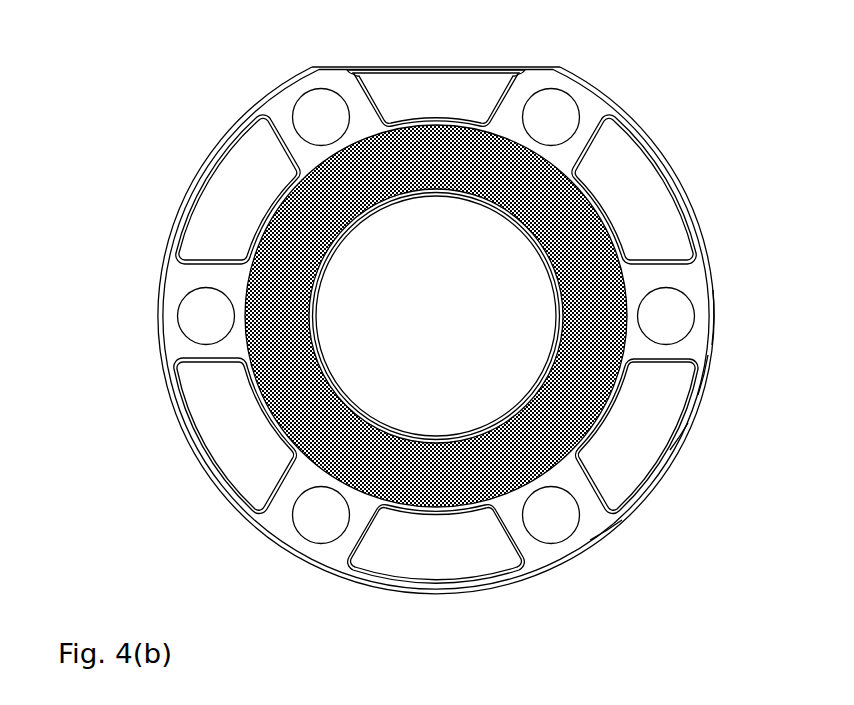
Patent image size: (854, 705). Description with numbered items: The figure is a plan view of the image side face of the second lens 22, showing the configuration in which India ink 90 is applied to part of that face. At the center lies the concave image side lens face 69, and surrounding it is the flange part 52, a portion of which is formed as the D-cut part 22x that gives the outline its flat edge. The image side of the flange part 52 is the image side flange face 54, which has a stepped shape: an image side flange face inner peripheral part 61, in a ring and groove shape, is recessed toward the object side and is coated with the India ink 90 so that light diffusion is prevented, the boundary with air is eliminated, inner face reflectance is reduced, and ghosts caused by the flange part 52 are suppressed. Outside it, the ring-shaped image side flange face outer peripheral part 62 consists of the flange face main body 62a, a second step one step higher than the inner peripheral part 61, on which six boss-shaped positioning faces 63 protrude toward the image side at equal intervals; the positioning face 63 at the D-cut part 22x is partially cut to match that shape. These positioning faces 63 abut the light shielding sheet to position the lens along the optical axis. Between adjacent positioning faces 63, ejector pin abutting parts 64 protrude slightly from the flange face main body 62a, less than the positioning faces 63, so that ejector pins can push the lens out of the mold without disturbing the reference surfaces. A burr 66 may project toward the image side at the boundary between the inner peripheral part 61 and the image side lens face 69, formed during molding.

The second lens 22 is at (121, 25).
The D-cut part 22x is at (521, 66).
The flange part 52 is at (693, 438).
The image side flange face 54 is at (707, 376).
The image side flange face inner peripheral part 61 is at (567, 212).
The image side flange face outer peripheral part 62 is at (703, 292).
The flange face main body 62a is at (595, 518).
The positioning face 63 is at (443, 87).
The ejector pin abutting part 64 is at (318, 104).
The burr 66 is at (338, 403).
The image side lens face 69 is at (432, 283).
The India ink 90 is at (295, 355).